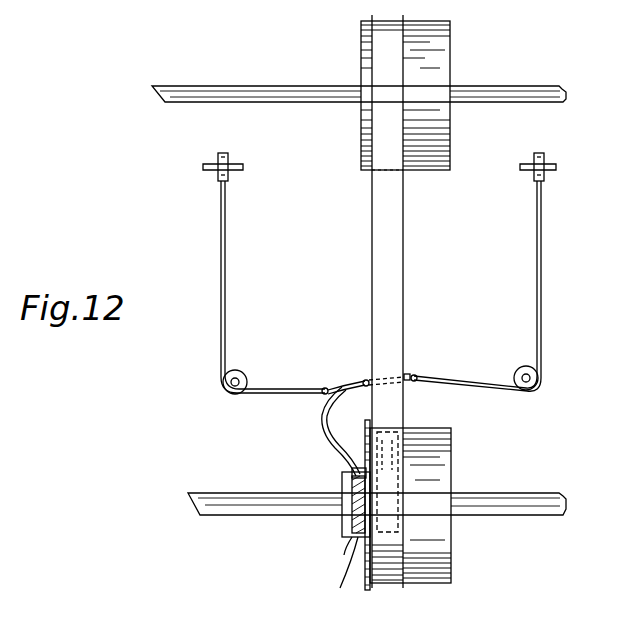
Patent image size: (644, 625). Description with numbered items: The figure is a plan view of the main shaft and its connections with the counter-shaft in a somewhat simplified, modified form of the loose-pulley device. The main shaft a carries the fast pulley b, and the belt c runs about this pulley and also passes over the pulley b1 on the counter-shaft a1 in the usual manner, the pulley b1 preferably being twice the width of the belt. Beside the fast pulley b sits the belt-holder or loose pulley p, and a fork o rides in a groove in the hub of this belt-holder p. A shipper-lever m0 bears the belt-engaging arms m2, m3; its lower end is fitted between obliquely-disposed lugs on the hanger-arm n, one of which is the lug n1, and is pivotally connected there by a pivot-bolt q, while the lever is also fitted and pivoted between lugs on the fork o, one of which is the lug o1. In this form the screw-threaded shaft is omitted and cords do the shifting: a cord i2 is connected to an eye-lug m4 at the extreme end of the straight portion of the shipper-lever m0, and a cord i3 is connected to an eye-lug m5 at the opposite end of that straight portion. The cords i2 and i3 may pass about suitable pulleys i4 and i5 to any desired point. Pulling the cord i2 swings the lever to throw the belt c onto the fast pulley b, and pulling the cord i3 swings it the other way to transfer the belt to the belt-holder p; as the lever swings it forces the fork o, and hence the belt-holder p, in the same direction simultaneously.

The counter-shaft a1 is at (529, 85).
The pulley b1 is at (450, 145).
The belt c is at (372, 260).
The cord i3 is at (222, 296).
The cord i2 is at (542, 322).
The pulley i5 is at (247, 379).
The pulley i4 is at (519, 368).
The belt-engaging arm m2 is at (364, 380).
The belt-engaging arm m3 is at (410, 374).
The eye-lug m4 is at (418, 382).
The eye-lug m5 is at (320, 396).
The shipper-lever m0 is at (323, 428).
The lug o1 is at (350, 455).
The hanger-arm n is at (344, 482).
The fork o is at (372, 512).
The fast pulley b is at (448, 444).
The main shaft a is at (540, 490).
The pivot-bolt q is at (336, 561).
The lug n1 is at (329, 577).
The belt-holder or loose pulley p is at (365, 580).